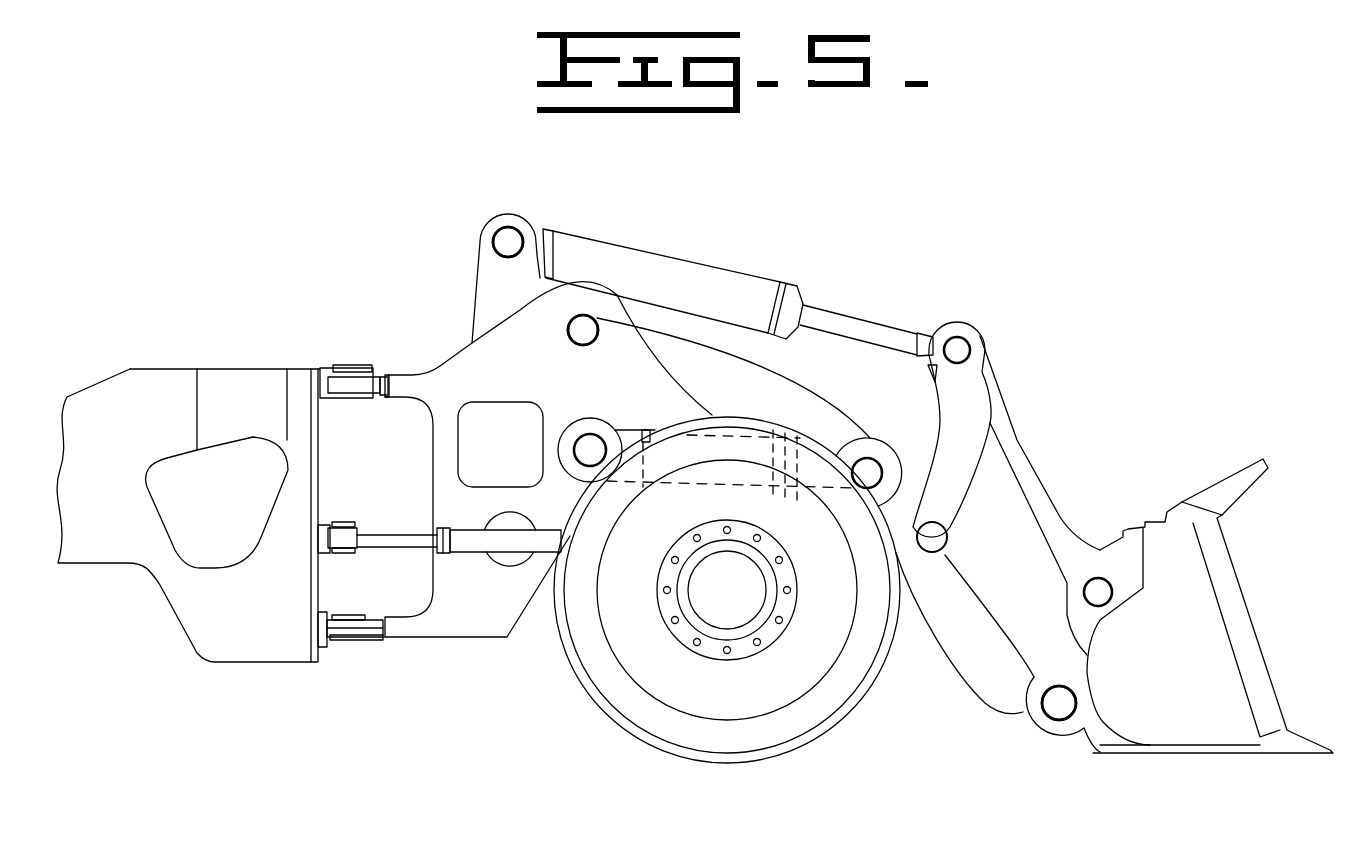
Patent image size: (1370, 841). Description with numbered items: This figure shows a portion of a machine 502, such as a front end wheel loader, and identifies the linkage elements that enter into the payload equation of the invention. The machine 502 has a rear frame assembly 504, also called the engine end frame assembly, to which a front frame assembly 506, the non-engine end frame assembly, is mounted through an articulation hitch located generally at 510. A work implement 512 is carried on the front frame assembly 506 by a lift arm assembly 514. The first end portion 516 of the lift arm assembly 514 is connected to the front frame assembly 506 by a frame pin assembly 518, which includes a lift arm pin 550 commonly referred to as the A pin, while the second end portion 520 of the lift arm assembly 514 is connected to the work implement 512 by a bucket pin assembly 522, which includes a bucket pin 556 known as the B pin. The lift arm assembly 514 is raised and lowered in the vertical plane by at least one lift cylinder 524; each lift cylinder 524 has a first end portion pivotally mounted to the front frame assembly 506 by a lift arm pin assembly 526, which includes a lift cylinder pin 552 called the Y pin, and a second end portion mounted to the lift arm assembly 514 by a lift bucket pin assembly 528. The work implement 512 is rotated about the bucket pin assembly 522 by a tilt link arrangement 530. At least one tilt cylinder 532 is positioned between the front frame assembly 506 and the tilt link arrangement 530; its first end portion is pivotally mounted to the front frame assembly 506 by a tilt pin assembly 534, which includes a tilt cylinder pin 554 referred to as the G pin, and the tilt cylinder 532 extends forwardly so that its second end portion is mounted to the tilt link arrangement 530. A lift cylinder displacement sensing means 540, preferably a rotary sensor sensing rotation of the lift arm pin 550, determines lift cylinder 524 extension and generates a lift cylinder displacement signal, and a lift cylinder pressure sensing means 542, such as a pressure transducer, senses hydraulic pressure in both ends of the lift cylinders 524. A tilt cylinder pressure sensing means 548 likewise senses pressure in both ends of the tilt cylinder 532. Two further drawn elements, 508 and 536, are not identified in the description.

The machine 502 is at (183, 207).
The rear frame assembly 504 is at (95, 393).
The front frame assembly 506 is at (475, 627).
The frame upper portion 508 is at (300, 468).
The articulation hitch 510 is at (346, 344).
The work implement 512 is at (1227, 598).
The lift arm assembly 514 is at (595, 238).
The first end portion 516 is at (747, 279).
The frame pin assembly 518 is at (590, 327).
The second end portion 520 is at (983, 702).
The bucket pin assembly 522 is at (1074, 696).
The lift cylinder 524 is at (720, 470).
The lift arm pin assembly 526 is at (574, 450).
The lift bucket pin assembly 528 is at (873, 455).
The tilt link arrangement 530 is at (1024, 332).
The tilt cylinder 532 is at (803, 292).
The tilt pin assembly 534 is at (493, 242).
The wheel 536 is at (730, 764).
The lift cylinder displacement sensing means 540 is at (690, 467).
The lift cylinder pressure sensing means 542 is at (727, 447).
The tilt cylinder pressure sensing means 548 is at (580, 270).
The lift arm pin 550 is at (592, 333).
The lift cylinder pin 552 is at (590, 448).
The tilt cylinder pin 554 is at (507, 230).
The bucket pin 556 is at (1073, 710).